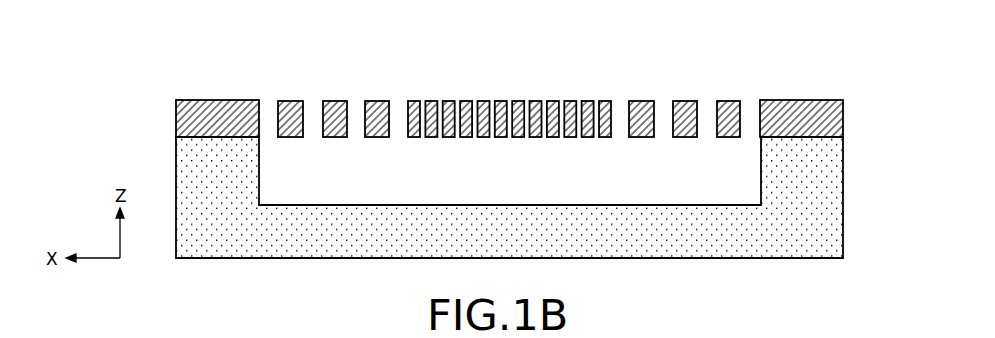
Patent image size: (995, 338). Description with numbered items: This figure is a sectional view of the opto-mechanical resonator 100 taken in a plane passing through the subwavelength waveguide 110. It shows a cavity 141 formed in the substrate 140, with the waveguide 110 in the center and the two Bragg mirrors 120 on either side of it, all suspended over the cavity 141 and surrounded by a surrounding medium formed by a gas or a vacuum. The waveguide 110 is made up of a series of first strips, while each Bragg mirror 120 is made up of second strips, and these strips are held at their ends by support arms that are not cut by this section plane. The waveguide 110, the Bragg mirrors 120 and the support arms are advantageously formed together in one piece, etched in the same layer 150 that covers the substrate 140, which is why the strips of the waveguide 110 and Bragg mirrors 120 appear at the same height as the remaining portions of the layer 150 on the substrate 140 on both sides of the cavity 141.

The opto-mechanical resonator 100 is at (138, 115).
The subwavelength waveguide 110 is at (620, 93).
The Bragg mirrors 120 is at (398, 93).
The substrate 140 is at (833, 212).
The cavity 141 is at (682, 187).
The layer 150 is at (855, 101).